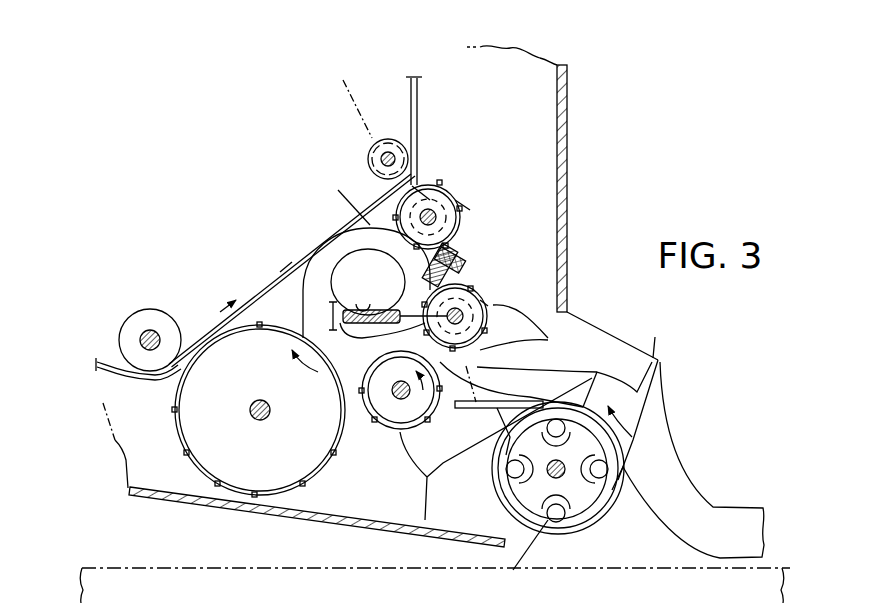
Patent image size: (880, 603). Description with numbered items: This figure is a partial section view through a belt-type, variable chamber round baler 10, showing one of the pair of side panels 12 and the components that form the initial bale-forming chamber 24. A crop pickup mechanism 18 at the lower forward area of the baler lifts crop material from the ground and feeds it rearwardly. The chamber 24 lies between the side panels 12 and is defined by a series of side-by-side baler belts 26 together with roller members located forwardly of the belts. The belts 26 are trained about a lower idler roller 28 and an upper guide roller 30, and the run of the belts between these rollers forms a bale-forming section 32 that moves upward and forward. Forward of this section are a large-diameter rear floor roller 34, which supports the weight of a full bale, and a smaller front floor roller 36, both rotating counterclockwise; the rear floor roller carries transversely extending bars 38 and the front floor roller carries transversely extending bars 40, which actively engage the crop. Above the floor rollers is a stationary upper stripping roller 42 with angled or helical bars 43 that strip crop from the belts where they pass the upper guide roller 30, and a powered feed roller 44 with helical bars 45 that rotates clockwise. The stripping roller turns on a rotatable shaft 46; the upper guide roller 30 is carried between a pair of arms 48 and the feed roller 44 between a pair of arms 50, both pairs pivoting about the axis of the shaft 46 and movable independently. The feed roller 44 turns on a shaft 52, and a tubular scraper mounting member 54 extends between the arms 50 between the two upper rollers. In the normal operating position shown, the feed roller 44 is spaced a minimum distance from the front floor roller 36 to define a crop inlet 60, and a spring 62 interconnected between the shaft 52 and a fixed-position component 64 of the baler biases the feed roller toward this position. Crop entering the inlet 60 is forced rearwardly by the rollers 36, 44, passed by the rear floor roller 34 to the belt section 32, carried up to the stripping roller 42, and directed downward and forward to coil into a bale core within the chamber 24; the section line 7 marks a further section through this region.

The round baler 10 is at (607, 107).
The side panel 12 is at (520, 89).
The crop pickup mechanism 18 is at (635, 440).
The initial bale-forming chamber 24 is at (283, 277).
The baler belts 26 is at (421, 97).
The lower idler roller 28 is at (128, 322).
The upper guide roller 30 is at (393, 138).
The bale-forming section 32 is at (282, 273).
The rear floor roller 34 is at (193, 467).
The front floor roller 36 is at (383, 430).
The transversely extending bars 38 is at (352, 460).
The transversely extending bars 40 is at (443, 463).
The upper stripping roller 42 is at (444, 187).
The helical bars 43 is at (456, 183).
The powered feed roller 44 is at (481, 286).
The helical bars 45 is at (543, 338).
The rotatable shaft 46 is at (462, 200).
The arms 48 is at (418, 177).
The arms 50 is at (460, 268).
The feed roller shaft 52 is at (490, 300).
The tubular scraper mounting member 54 is at (470, 232).
The crop inlet 60 is at (460, 365).
The spring 62 is at (372, 305).
The fixed-position component 64 is at (302, 285).
The section line FIG. 7 is at (347, 80).